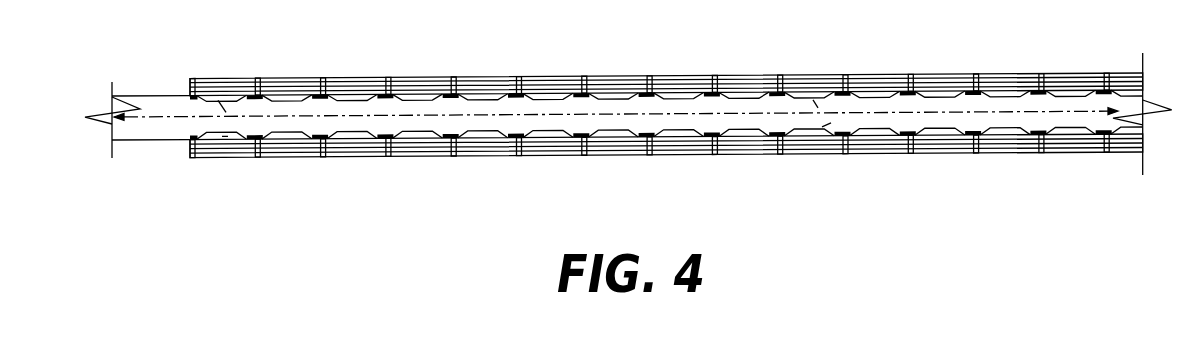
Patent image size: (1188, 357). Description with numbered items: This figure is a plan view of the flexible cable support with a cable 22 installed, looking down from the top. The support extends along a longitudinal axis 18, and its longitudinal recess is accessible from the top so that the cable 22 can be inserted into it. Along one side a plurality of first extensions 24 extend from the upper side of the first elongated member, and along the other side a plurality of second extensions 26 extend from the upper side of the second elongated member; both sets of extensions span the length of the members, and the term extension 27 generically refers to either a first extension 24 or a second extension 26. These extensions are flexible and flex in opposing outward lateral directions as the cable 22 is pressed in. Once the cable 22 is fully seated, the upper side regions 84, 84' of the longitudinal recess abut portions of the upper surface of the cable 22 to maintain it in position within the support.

The longitudinal axis 18 is at (1083, 113).
The cable 22 is at (207, 123).
The plurality of first extensions 24 is at (287, 157).
The plurality of second extensions 26 is at (278, 80).
The extension 27 is at (405, 82).
The upper side region 84 is at (529, 64).
The upper side region 84' is at (523, 179).